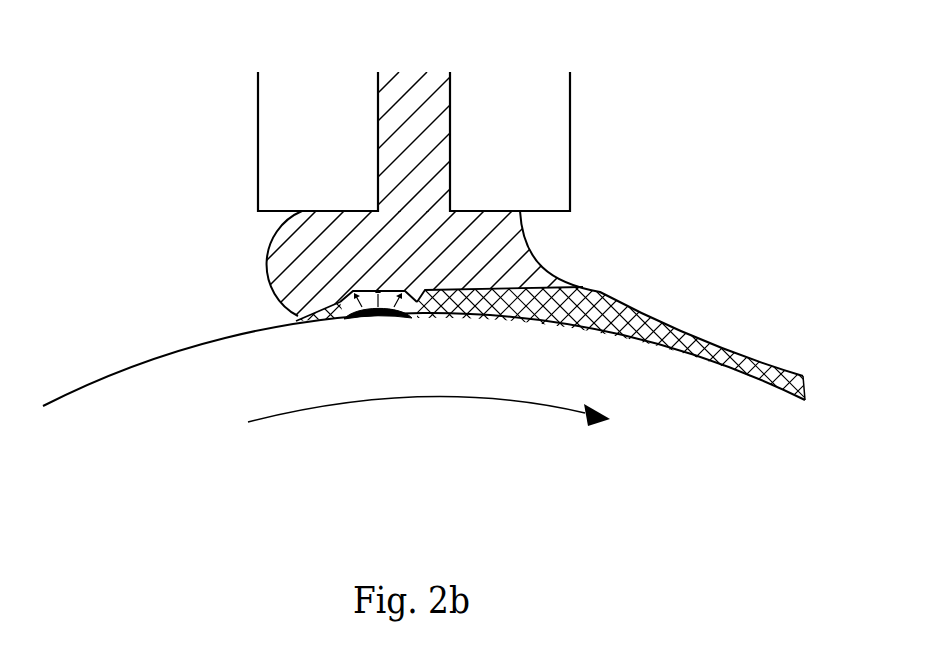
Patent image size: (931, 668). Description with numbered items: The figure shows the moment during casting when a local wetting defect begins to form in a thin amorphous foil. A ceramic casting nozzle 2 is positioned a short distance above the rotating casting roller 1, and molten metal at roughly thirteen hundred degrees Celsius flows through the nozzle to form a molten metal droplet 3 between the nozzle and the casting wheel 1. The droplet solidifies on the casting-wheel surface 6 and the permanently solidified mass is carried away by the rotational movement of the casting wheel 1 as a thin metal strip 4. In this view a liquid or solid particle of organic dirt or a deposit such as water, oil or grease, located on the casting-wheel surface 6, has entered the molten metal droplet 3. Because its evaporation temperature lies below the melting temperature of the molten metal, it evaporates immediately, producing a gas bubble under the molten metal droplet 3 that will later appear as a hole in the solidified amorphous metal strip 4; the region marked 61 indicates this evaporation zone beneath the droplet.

The rotating casting roller 1 is at (643, 379).
The ceramic casting nozzle 2 is at (540, 118).
The molten metal droplet 3 is at (503, 252).
The thin metal strip 4 is at (721, 342).
The casting-wheel surface 6 is at (376, 324).
The cavity around deposit 61 is at (345, 299).